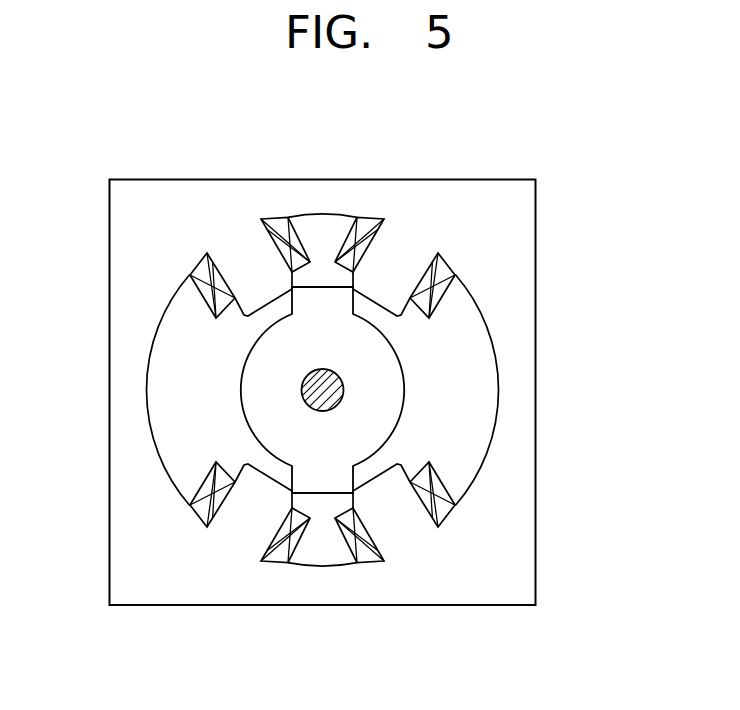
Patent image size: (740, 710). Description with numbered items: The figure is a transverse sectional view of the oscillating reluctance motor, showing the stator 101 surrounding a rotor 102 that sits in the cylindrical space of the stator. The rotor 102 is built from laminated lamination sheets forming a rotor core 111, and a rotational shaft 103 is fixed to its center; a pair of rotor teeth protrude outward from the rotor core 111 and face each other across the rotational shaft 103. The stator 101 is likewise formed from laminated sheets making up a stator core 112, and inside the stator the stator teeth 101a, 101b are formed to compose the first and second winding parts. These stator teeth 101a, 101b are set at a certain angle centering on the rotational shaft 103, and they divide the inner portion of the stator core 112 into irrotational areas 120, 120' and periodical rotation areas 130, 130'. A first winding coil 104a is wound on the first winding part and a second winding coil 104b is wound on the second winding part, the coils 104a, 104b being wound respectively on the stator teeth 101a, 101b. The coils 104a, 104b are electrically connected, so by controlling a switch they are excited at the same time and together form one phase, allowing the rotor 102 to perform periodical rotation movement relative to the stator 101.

The stator 101 is at (545, 196).
The stator tooth 101a is at (235, 255).
The stator tooth 101b is at (410, 284).
The rotor 102 is at (242, 338).
The rotational shaft 103 is at (304, 386).
The first winding coil 104a is at (283, 233).
The second winding coil 104b is at (365, 230).
The rotor core 111 is at (283, 363).
The stator core 112 is at (131, 220).
The irrotational area 120 is at (153, 401).
The irrotational area 120' is at (440, 408).
The periodical rotation area 130 is at (326, 195).
The periodical rotation area 130' is at (322, 579).